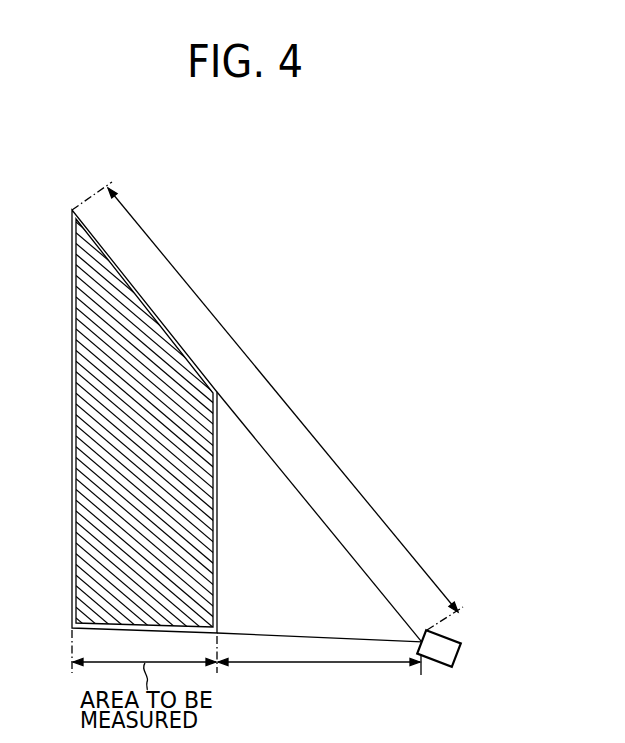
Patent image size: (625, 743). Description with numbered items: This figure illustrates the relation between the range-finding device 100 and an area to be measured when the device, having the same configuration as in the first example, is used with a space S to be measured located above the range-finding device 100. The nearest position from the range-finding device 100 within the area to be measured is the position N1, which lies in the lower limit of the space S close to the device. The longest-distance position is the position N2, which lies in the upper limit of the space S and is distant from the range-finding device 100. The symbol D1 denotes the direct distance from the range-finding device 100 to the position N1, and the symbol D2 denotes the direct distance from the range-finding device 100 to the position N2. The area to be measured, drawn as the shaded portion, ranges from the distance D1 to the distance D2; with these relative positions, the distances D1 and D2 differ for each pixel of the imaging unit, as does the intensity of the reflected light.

The space to be measured S is at (92, 448).
The nearest position N1 is at (218, 633).
The longest-distance position N2 is at (72, 210).
The range-finding device 100 is at (440, 667).
The direct distance to position N1 D1 is at (319, 674).
The direct distance to position N2 D2 is at (283, 400).